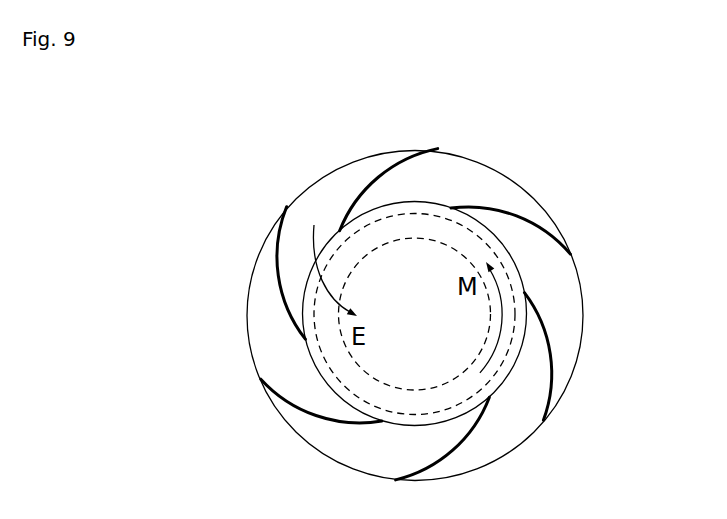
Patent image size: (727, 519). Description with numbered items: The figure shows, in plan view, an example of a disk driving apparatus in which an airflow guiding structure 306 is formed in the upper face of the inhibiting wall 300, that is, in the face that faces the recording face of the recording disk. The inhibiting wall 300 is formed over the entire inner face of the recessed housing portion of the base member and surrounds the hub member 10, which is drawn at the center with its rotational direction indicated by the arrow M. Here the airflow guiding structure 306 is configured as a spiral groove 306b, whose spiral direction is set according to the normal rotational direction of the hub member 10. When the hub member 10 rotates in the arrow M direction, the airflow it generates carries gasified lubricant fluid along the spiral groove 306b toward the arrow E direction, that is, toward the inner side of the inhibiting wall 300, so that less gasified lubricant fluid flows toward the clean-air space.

The inhibiting wall 300 is at (343, 194).
The hub member 10 is at (431, 228).
The airflow guiding structure 306 is at (487, 188).
The spiral groove 306b is at (551, 327).